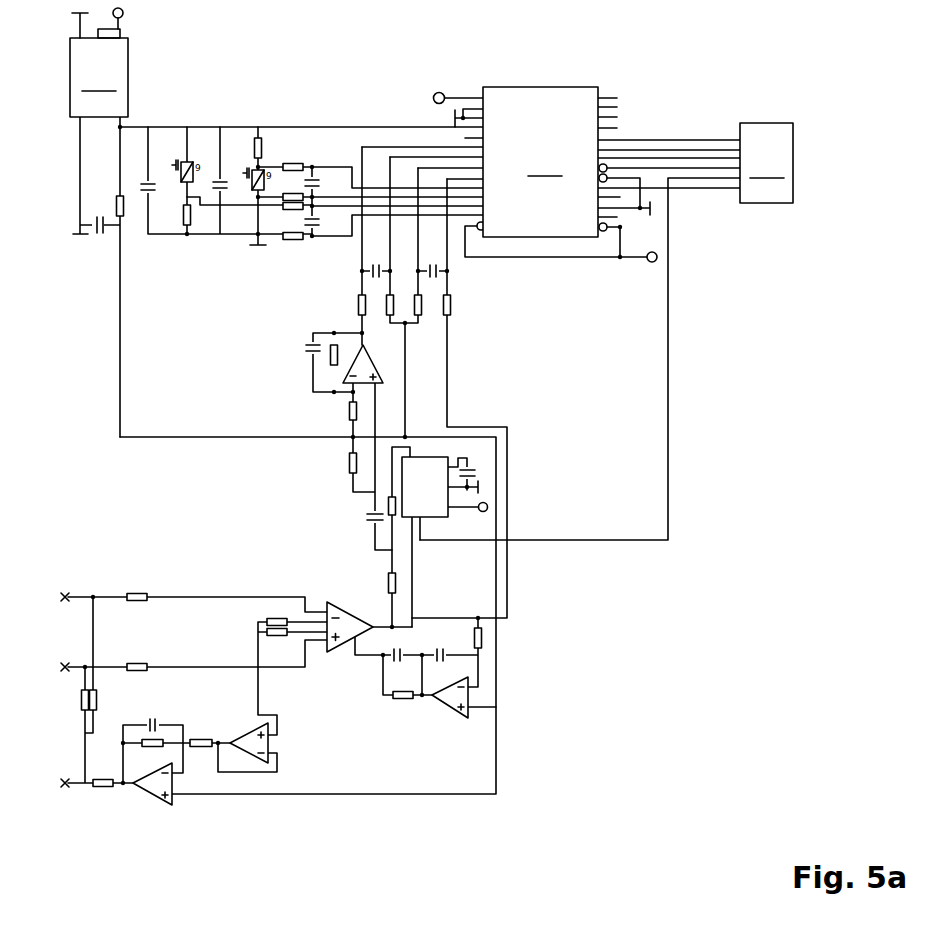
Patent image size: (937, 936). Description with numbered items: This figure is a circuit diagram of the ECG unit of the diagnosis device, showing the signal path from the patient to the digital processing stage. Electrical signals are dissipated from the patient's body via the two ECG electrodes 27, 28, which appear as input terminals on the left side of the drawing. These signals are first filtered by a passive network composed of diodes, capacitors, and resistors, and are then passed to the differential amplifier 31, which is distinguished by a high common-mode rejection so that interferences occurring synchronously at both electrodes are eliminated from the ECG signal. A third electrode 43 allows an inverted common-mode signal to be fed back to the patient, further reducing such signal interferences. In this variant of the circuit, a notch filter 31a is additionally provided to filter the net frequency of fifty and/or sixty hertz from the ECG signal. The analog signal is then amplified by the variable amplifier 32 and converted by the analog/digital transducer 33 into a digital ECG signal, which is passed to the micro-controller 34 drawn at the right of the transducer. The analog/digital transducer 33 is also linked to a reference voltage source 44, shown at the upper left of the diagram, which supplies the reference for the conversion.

The reference voltage source 44 is at (99, 65).
The analog/digital transducer 33 is at (540, 162).
The micro-controller 34 is at (766, 163).
The variable amplifier 32 is at (360, 370).
The differential amplifier 31 is at (350, 622).
The notch filter 31a is at (425, 487).
The ECG electrode 27 is at (41, 597).
The ECG electrode 28 is at (41, 667).
The third electrode 43 is at (41, 783).